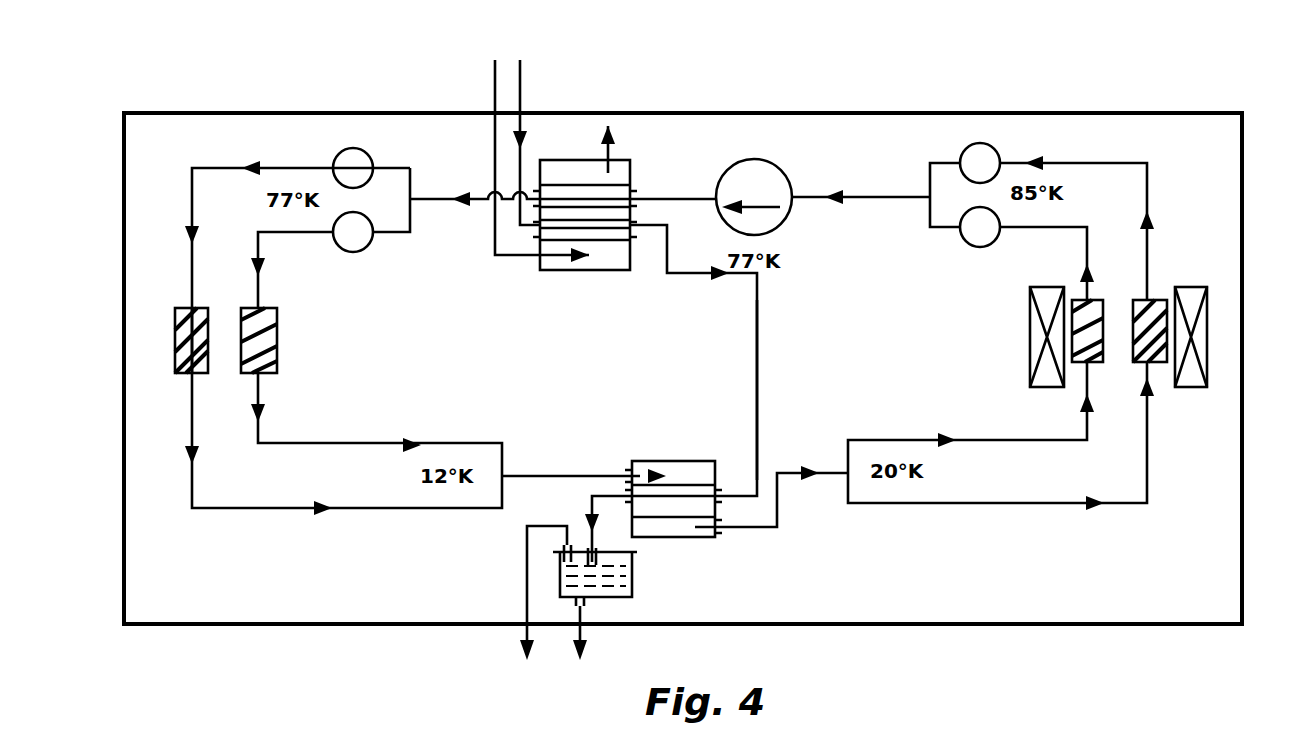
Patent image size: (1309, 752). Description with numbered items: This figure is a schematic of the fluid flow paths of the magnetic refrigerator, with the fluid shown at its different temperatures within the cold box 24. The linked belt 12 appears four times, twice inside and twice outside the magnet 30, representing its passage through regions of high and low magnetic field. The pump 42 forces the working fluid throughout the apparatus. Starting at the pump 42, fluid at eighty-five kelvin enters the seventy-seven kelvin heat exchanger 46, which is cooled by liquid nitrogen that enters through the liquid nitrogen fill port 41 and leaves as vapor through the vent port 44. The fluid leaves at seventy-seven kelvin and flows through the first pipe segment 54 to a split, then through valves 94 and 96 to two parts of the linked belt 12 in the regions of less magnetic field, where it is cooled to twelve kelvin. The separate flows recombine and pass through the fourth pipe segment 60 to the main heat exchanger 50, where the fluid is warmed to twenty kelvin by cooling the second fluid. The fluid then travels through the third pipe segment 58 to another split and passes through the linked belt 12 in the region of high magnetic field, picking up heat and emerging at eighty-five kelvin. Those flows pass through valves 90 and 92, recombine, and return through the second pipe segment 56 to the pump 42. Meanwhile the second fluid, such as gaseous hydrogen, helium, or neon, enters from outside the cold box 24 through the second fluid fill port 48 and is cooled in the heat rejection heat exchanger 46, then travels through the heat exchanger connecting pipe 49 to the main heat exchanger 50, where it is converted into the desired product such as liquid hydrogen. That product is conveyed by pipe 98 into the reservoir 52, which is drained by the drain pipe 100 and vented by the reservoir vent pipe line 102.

The linked belt 12 is at (258, 306).
The cold box 24 is at (945, 624).
The magnet 30 is at (1030, 340).
The liquid nitrogen fill port 41 is at (492, 85).
The pump 42 is at (775, 165).
The vent port 44 is at (610, 85).
The 77K heat exchanger 46 is at (540, 272).
The second fluid fill port 48 is at (518, 85).
The heat exchanger connecting pipe 49 is at (759, 366).
The main heat exchanger 50 is at (705, 540).
The reservoir 52 is at (637, 556).
The first pipe segment 54 is at (490, 208).
The second pipe segment 56 is at (850, 190).
The third pipe segment 58 is at (780, 505).
The fourth pipe segment 60 is at (532, 470).
The valve 90 is at (995, 150).
The valve 92 is at (970, 243).
The valve 94 is at (355, 148).
The valve 96 is at (365, 250).
The pipe 98 is at (590, 510).
The drain pipe 100 is at (585, 625).
The reservoir vent pipe line 102 is at (525, 612).